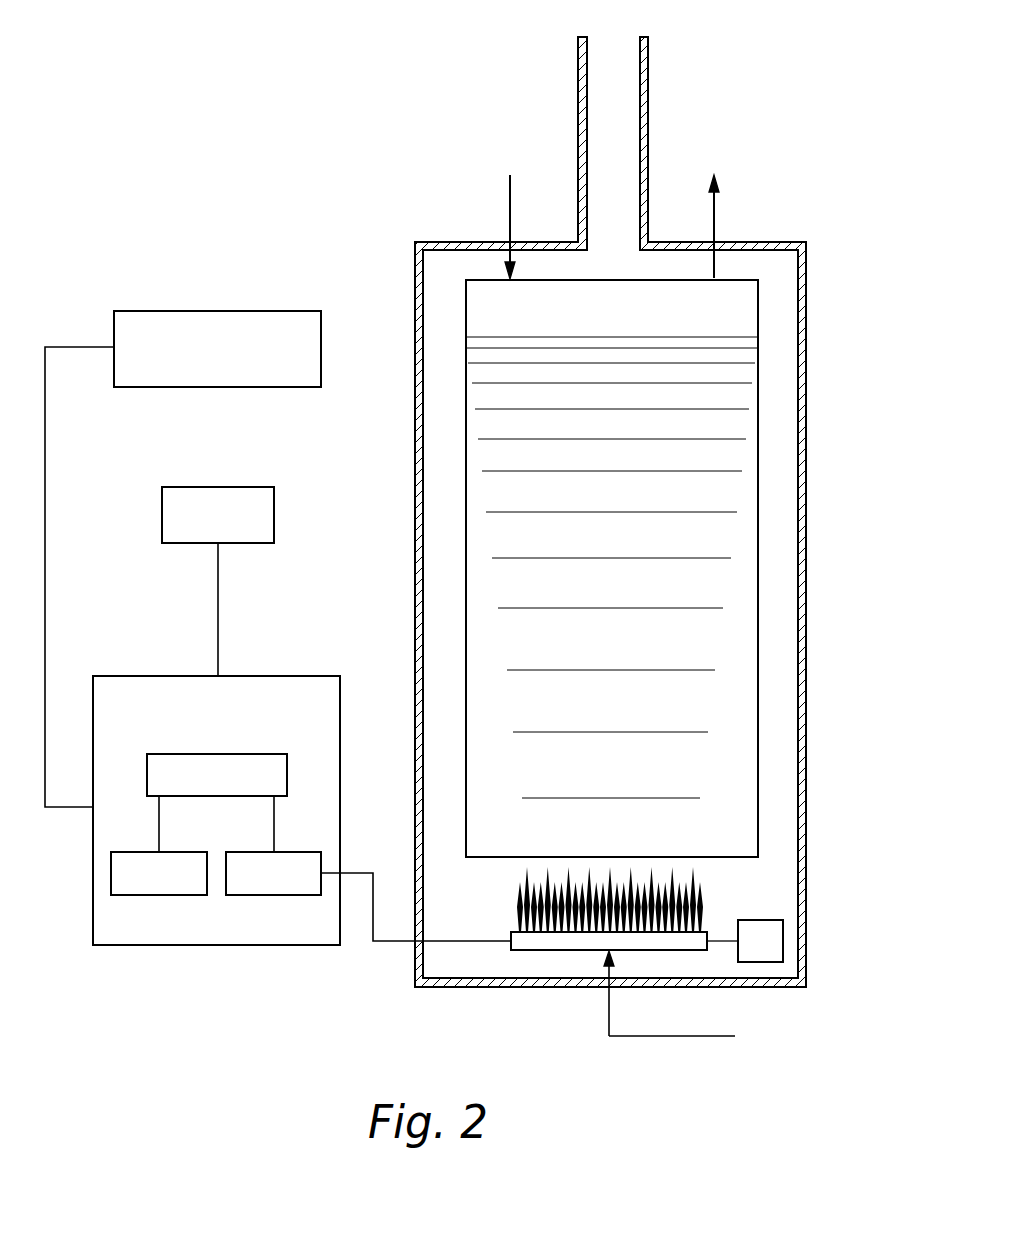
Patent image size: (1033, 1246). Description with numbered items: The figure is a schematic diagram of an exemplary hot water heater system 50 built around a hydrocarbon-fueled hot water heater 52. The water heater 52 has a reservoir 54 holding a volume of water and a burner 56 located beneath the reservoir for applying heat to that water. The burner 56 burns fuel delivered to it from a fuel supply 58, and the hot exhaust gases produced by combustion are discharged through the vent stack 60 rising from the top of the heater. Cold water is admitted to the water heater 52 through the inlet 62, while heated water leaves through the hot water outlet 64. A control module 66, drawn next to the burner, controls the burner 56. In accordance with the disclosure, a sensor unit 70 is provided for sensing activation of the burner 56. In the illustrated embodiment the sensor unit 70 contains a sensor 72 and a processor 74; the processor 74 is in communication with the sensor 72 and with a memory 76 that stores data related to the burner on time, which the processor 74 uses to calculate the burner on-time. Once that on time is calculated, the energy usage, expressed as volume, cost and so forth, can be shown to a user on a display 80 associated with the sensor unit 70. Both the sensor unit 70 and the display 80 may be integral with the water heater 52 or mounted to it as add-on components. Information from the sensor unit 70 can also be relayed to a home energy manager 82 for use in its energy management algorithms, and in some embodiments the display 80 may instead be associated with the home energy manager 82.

The hot water heater system 50 is at (285, 140).
The hydrocarbon-fueled hot water heater 52 is at (415, 477).
The reservoir 54 is at (758, 566).
The burner 56 is at (710, 898).
The fuel supply 58 is at (694, 1036).
The vent stack 60 is at (648, 62).
The inlet 62 is at (510, 208).
The hot water outlet 64 is at (714, 213).
The control module 66 is at (783, 941).
The sensor unit 70 is at (275, 676).
The sensor 72 is at (260, 895).
The processor 74 is at (208, 754).
The memory 76 is at (172, 895).
The display 80 is at (200, 487).
The home energy manager 82 is at (193, 311).